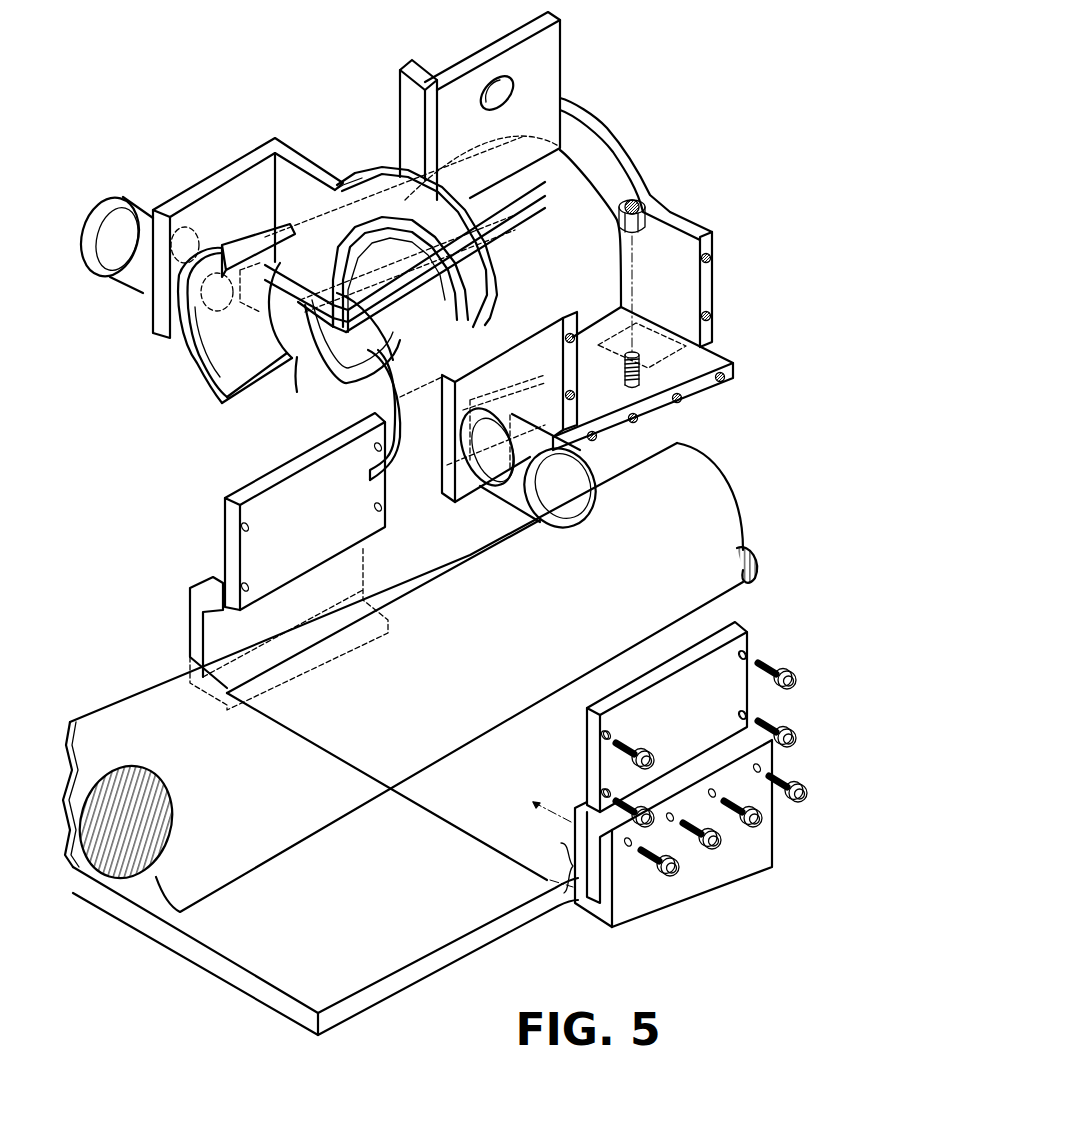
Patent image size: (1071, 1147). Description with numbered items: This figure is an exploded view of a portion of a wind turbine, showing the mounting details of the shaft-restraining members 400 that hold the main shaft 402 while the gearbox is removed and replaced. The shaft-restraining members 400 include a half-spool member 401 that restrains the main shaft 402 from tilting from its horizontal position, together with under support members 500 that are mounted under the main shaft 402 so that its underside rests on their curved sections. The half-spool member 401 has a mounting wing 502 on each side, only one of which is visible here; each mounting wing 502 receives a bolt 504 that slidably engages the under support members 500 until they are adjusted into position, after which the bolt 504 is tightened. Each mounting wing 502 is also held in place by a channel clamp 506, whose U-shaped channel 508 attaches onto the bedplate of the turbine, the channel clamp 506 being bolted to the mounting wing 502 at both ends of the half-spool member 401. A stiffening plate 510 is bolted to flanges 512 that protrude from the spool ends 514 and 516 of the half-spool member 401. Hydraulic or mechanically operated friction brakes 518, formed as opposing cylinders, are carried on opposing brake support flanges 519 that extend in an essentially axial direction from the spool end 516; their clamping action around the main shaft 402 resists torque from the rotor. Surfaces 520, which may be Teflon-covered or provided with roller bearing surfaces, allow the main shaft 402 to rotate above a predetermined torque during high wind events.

The shaft-restraining members 400 is at (352, 41).
The half-spool member 401 is at (582, 107).
The main shaft 402 is at (258, 768).
The under support members 500 is at (413, 390).
The mounting wing 502 is at (718, 352).
The bolt 504 is at (636, 363).
The channel clamp 506 is at (188, 626).
The U-shaped channel 508 is at (547, 847).
The stiffening plate 510 is at (272, 480).
The flanges 512 is at (710, 246).
The spool end 514 is at (620, 140).
The spool end 516 is at (362, 180).
The friction brakes 518 is at (128, 200).
The brake support flanges 519 is at (224, 174).
The surfaces 520 is at (632, 333).